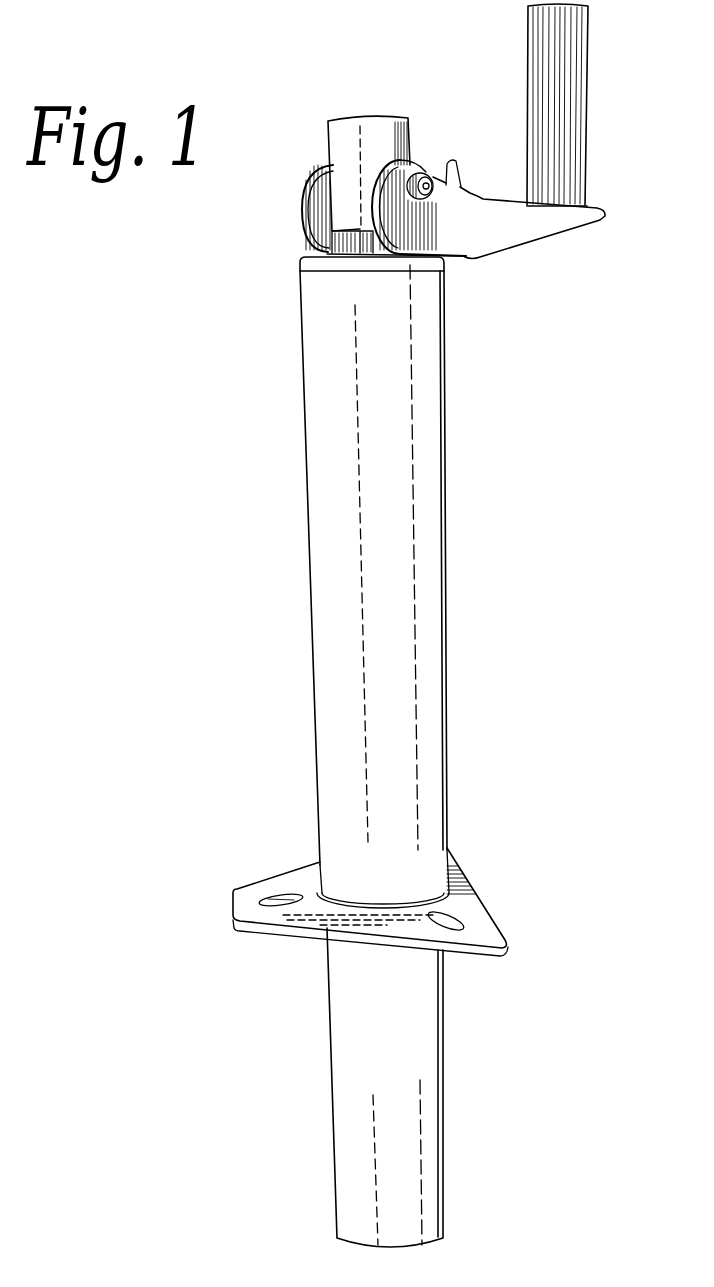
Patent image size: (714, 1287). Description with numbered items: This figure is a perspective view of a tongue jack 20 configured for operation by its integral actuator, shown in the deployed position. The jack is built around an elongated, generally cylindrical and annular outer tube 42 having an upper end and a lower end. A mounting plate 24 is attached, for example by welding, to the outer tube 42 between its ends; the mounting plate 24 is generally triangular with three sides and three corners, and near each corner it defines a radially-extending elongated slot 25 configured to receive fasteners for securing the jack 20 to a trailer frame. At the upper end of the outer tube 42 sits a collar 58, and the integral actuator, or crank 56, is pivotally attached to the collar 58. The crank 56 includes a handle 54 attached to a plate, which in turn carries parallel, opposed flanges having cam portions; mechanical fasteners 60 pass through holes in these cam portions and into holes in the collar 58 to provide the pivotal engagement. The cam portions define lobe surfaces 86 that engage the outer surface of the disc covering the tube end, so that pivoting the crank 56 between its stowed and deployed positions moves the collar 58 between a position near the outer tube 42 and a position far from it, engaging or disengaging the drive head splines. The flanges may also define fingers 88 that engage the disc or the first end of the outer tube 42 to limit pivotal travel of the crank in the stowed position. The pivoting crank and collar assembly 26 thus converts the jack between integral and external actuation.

The tongue jack 20 is at (258, 41).
The mounting plate 24 is at (480, 912).
The slot 25 is at (272, 898).
The hinge mount assembly 26 is at (519, 276).
The outer tube 42 is at (315, 472).
The handle 54 is at (576, 100).
The crank 56 is at (492, 215).
The collar 58 is at (375, 127).
The mechanical fastener 60 is at (423, 172).
The lobe surface 86 is at (505, 212).
The finger 88 is at (451, 162).